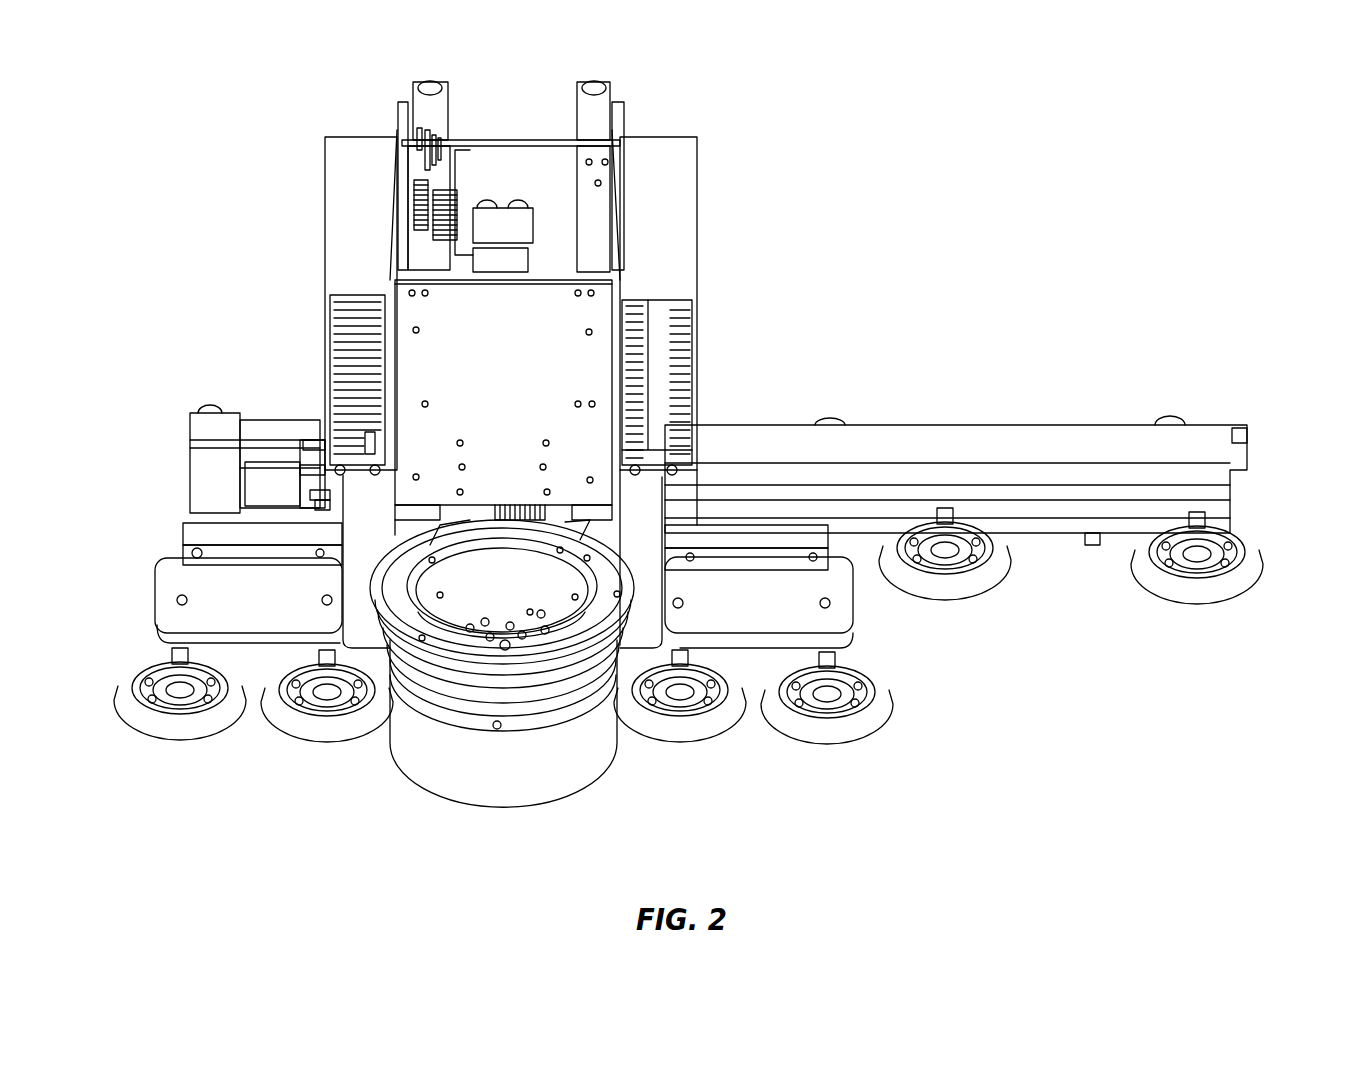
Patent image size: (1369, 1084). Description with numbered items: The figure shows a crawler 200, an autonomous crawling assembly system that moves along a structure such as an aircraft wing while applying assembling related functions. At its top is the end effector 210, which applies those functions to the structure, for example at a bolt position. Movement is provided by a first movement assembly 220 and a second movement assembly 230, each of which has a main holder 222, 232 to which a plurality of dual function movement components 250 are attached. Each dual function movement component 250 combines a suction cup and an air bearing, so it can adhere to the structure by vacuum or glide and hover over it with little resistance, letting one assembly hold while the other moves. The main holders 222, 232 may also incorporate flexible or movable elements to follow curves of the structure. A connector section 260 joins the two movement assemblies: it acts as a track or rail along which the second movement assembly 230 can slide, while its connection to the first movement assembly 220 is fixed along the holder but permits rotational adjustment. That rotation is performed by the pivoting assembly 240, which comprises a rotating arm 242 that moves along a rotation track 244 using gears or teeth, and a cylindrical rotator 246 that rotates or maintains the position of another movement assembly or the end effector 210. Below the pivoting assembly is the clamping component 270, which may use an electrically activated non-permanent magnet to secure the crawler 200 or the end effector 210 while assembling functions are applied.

The crawler 200 is at (200, 137).
The end effector 210 is at (525, 162).
The first movement assembly 220 is at (880, 604).
The main holder 222 is at (732, 619).
The second movement assembly 230 is at (1093, 408).
The main holder 232 is at (925, 430).
The pivoting assembly 240 is at (447, 622).
The rotating arm 242 is at (505, 492).
The rotation track 244 is at (513, 533).
The cylindrical rotator 246 is at (400, 620).
The dual function movement component 250 is at (1202, 583).
The connector section 260 is at (647, 535).
The clamping component 270 is at (531, 789).